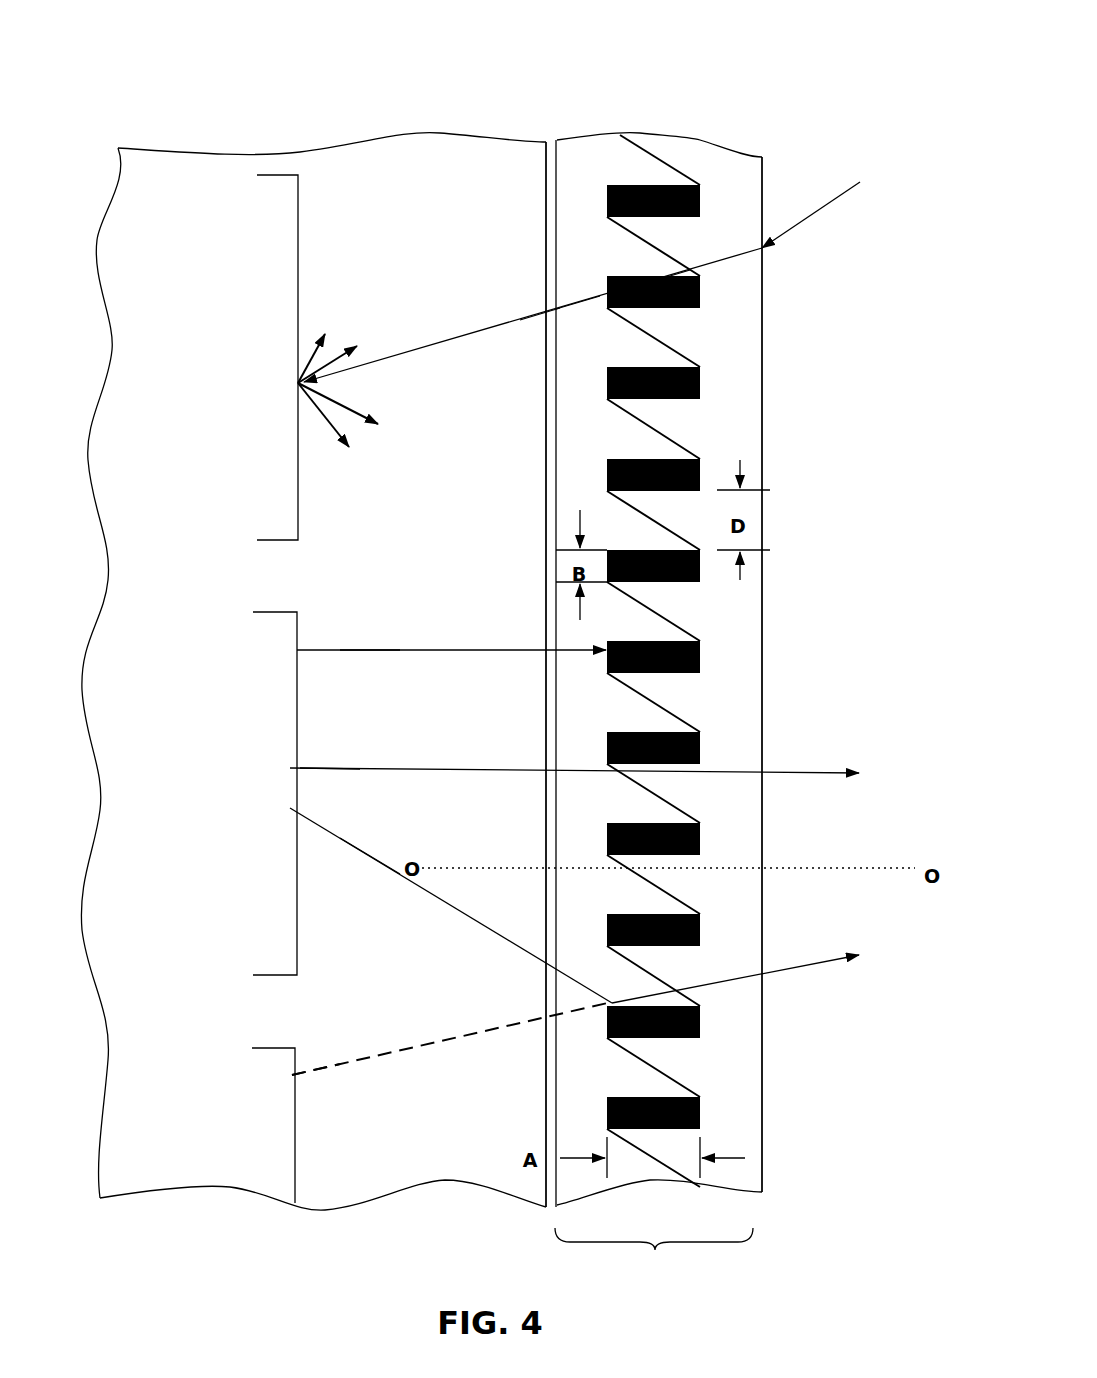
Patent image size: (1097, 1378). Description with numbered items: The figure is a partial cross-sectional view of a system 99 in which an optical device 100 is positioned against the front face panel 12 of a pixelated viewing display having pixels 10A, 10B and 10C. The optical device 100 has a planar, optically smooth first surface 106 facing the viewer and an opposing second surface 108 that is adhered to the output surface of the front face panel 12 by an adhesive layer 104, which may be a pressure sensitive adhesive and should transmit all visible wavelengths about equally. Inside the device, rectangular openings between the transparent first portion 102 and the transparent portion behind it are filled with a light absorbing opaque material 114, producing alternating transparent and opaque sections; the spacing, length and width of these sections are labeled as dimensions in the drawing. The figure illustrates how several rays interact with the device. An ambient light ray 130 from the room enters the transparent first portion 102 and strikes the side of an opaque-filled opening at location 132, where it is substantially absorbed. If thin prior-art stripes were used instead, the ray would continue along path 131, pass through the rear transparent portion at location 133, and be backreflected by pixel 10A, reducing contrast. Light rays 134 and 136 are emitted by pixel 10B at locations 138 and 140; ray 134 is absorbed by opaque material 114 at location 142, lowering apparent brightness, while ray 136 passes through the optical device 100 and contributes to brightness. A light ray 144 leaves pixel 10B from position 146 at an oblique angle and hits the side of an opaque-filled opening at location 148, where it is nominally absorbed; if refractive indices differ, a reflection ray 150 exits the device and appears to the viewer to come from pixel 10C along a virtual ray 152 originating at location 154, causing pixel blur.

The system 99 is at (353, 116).
The front face panel 12 is at (445, 170).
The adhesive layer 104 is at (556, 136).
The second surface 108 is at (541, 831).
The transparent first portion 102 is at (734, 428).
The first surface 106 is at (767, 848).
The opaque material 114 is at (668, 180).
The optical device 100 is at (654, 1253).
The pixel 10A is at (256, 380).
The pixel 10B is at (256, 935).
The pixel 10C is at (266, 1118).
The ambient light ray 130 is at (582, 271).
The path 131 is at (566, 321).
The location 132 is at (664, 283).
The location 133 is at (539, 302).
The emitted light ray 134 is at (370, 662).
The light ray 136 is at (318, 780).
The location 138 is at (291, 650).
The location 140 is at (286, 768).
The location 142 is at (599, 642).
The light ray 144 is at (372, 867).
The position 146 is at (286, 810).
The location 148 is at (606, 998).
The reflection ray 150 is at (810, 965).
The virtual ray 152 is at (395, 1059).
The location 154 is at (288, 1075).